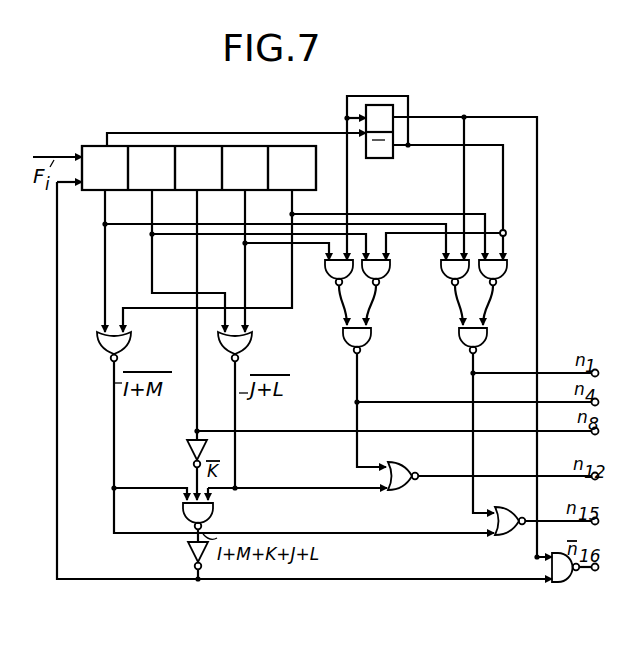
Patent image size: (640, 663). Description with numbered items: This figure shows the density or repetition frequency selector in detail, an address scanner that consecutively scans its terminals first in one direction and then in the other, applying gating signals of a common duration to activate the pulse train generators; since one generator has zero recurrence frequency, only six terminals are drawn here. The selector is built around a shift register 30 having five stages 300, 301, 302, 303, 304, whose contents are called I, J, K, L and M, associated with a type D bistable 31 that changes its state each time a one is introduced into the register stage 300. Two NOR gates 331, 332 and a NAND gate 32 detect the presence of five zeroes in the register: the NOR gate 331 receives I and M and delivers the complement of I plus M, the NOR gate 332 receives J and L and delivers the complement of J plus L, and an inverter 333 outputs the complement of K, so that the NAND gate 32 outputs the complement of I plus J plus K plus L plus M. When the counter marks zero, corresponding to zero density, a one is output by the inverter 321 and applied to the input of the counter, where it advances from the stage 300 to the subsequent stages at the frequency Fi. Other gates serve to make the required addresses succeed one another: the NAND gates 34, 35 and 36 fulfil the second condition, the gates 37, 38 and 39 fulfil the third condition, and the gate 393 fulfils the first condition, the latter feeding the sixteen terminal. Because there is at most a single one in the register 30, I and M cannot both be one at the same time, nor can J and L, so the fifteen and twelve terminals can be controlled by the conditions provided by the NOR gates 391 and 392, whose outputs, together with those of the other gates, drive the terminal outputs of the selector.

The shift register 30 is at (193, 167).
The register stage 300 is at (92, 191).
The register stage 301 is at (143, 191).
The register stage 302 is at (192, 189).
The register stage 303 is at (232, 189).
The register stage 304 is at (278, 189).
The type D bistable 31 is at (369, 160).
The NAND gate 34 is at (327, 281).
The NAND gate 35 is at (389, 281).
The NAND gate 36 is at (371, 338).
The NAND gate 37 is at (443, 281).
The NAND gate 38 is at (506, 281).
The NAND gate 39 is at (487, 338).
The NOR gate 331 is at (128, 343).
The NOR gate 332 is at (250, 343).
The inverter 333 is at (187, 446).
The NAND gate 32 is at (183, 512).
The inverter 321 is at (188, 552).
The NOR gate 391 is at (395, 490).
The NOR gate 392 is at (510, 536).
The gate 393 is at (556, 584).